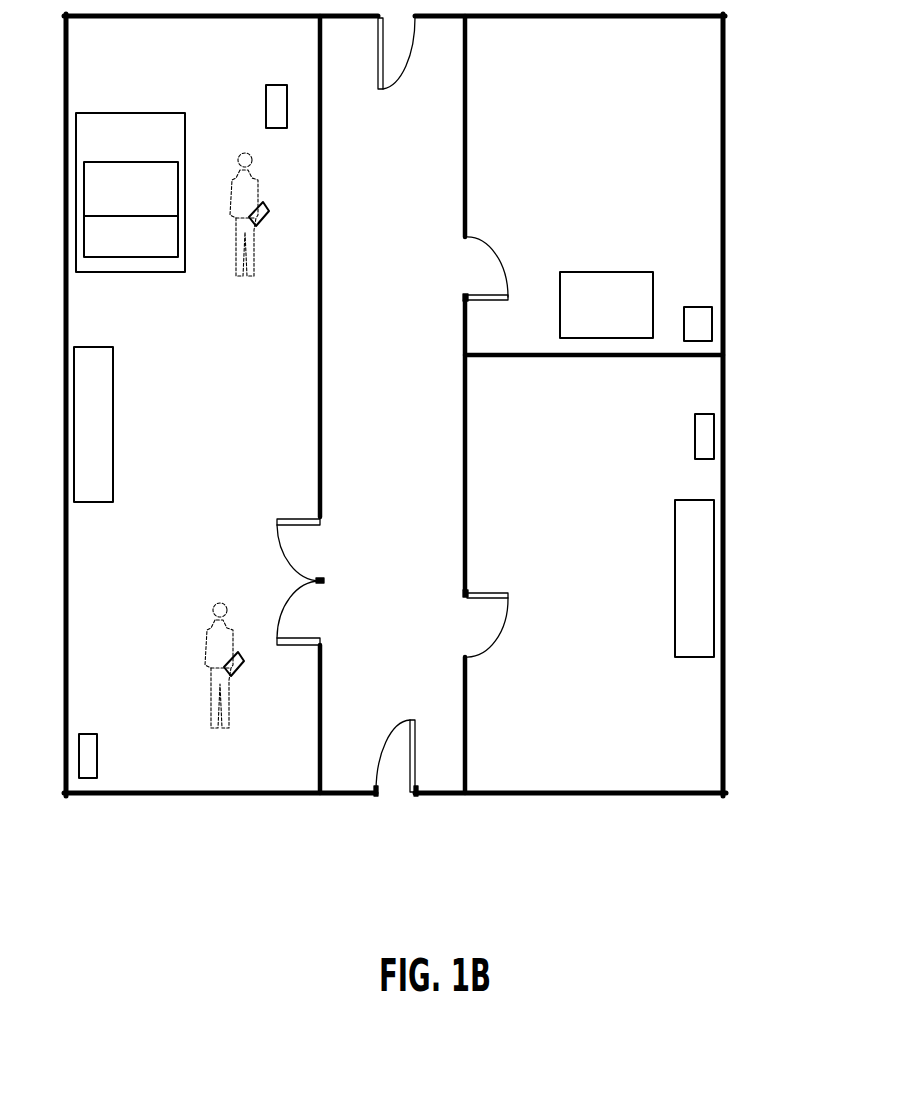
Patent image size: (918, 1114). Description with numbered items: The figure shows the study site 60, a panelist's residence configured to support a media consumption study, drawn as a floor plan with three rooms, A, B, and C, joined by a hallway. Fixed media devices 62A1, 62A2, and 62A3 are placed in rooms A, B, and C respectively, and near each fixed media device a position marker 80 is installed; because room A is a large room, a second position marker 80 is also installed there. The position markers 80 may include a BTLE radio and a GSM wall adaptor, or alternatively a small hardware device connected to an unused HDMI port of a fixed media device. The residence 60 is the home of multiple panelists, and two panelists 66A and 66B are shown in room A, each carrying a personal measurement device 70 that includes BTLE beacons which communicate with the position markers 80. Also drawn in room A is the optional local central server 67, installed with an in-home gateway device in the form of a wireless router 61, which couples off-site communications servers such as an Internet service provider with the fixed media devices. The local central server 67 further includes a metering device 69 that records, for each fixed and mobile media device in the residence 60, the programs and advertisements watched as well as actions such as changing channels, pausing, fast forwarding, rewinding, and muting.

The study site 60 is at (740, 190).
The wireless router 61 is at (110, 113).
The local central server 67 is at (180, 172).
The metering device 69 is at (180, 243).
The position marker 80 is at (270, 85).
The fixed media device 62A1 is at (114, 428).
The fixed media device 62A2 is at (606, 272).
The fixed media device 62A3 is at (675, 562).
The panelist 66A is at (255, 271).
The panelist 66B is at (230, 722).
The personal measurement device 70 is at (268, 212).